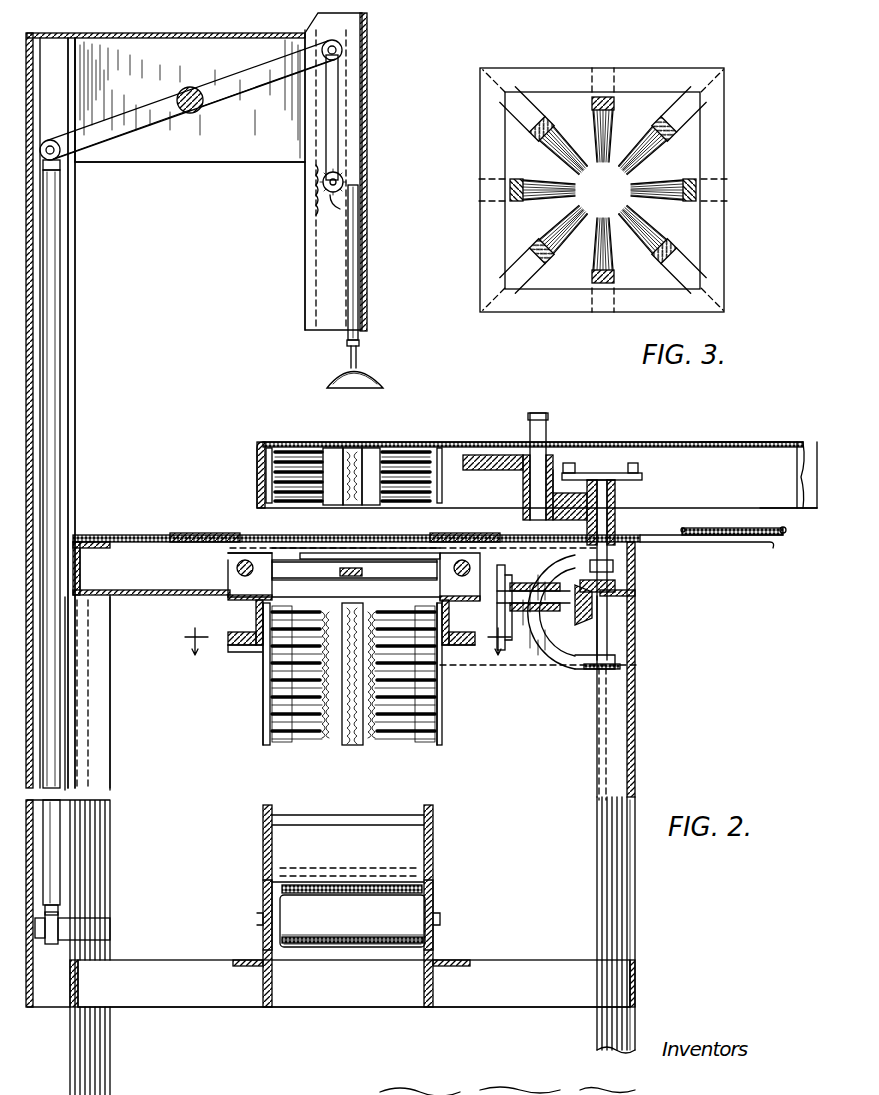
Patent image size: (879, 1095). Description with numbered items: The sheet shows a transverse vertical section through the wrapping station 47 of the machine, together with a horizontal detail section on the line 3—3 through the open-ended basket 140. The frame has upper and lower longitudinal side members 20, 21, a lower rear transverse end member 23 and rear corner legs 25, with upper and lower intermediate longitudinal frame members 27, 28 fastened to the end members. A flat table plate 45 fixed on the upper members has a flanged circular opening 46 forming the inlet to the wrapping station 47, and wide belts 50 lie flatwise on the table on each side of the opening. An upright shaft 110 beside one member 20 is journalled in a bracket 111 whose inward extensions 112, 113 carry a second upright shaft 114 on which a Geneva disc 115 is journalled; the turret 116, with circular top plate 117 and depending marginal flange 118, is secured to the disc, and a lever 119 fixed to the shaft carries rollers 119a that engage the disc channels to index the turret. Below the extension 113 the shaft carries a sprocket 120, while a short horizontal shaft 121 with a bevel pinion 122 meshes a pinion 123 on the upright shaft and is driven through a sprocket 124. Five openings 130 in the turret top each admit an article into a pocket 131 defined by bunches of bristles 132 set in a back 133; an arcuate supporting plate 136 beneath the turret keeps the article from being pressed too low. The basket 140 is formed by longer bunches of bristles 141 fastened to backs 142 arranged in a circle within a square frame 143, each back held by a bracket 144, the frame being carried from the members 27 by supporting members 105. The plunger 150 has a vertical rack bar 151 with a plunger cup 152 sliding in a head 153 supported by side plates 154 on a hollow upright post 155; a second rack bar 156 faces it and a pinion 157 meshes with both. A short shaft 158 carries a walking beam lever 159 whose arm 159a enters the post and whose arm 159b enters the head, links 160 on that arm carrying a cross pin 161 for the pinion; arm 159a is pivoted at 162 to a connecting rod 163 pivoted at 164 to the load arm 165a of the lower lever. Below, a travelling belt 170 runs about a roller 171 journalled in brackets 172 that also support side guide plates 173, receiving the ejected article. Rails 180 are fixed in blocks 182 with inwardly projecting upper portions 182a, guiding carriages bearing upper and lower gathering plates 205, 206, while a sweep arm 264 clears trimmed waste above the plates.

In FIG. 2, the section line 3— 3 is at (344, 646).
In FIG. 2, the upper longitudinal side member 20 is at (80, 569).
In FIG. 2, the lower longitudinal side member 21 is at (80, 984).
In FIG. 2, the lower rear transverse end member 23 is at (186, 1005).
In FIG. 2, the rear corner leg 25 is at (110, 863).
In FIG. 2, the upper intermediate longitudinal frame member 27 is at (225, 596).
In FIG. 2, the lower intermediate longitudinal frame member 28 is at (262, 985).
In FIG. 2, the table plate 45 is at (133, 535).
In FIG. 2, the circular opening 46 is at (286, 545).
In FIG. 2, the wrapping station 47 is at (241, 682).
In FIG. 2, the belt 50 is at (195, 534).
In FIG. 2, the carriage bracket 105 is at (256, 635).
In FIG. 2, the upright shaft 110 is at (612, 613).
In FIG. 2, the bracket 111 is at (616, 519).
In FIG. 2, the top bracket extension 112 is at (545, 519).
In FIG. 2, the bottom bracket extension 113 is at (560, 640).
In FIG. 2, the second upright shaft 114 is at (540, 412).
In FIG. 2, the Geneva disc 115 is at (555, 455).
In FIG. 2, the turret 116 is at (749, 436).
In FIG. 2, the circular top plate 117 is at (694, 441).
In FIG. 2, the depending marginal flange 118 is at (800, 470).
In FIG. 2, the lever 119 is at (620, 472).
In FIG. 2, the roller 119a is at (640, 467).
In FIG. 2, the sprocket 120 is at (622, 665).
In FIG. 2, the short horizontal shaft 121 is at (540, 655).
In FIG. 2, the bevel pinion 122 is at (585, 620).
In FIG. 2, the pinion 123 is at (620, 587).
In FIG. 2, the sprocket 124 is at (505, 680).
In FIG. 2, the circular opening 130 is at (419, 436).
In FIG. 2, the article holding pocket 131 is at (381, 456).
In FIG. 2, the bunch of bristles 132 is at (305, 452).
In FIG. 2, the back 133 is at (270, 444).
In FIG. 2, the arcuate supporting plate 136 is at (781, 536).
In FIG. 2, the basket 140 is at (305, 750).
In FIG. 2, the bunch of bristles 141 is at (396, 746).
In FIG. 3, the bunch of bristles 141 is at (605, 165).
In FIG. 2, the back 142 is at (438, 746).
In FIG. 3, the back 142 is at (672, 145).
In FIG. 2, the square frame 143 is at (250, 648).
In FIG. 3, the square frame 143 is at (724, 223).
In FIG. 2, the bracket 144 is at (266, 685).
In FIG. 3, the bracket 144 is at (585, 281).
In FIG. 2, the plunger 150 is at (340, 303).
In FIG. 2, the vertical rack bar 151 is at (358, 251).
In FIG. 2, the plunger cup 152 is at (372, 380).
In FIG. 2, the head 153 is at (367, 289).
In FIG. 2, the side plate 154 is at (230, 150).
In FIG. 2, the hollow upright post 155 is at (85, 241).
In FIG. 2, the second rack bar 156 is at (314, 210).
In FIG. 2, the pinion 157 is at (348, 209).
In FIG. 2, the short shaft 158 is at (186, 114).
In FIG. 2, the walking beam lever 159 is at (211, 75).
In FIG. 2, the lever arm 159a is at (124, 105).
In FIG. 2, the lever arm 159b is at (230, 77).
In FIG. 2, the link 160 is at (330, 134).
In FIG. 2, the cross pin 161 is at (343, 181).
In FIG. 2, the pivotal connection 162 is at (52, 145).
In FIG. 2, the connecting rod 163 is at (55, 301).
In FIG. 2, the pivotal connection 164 is at (56, 914).
In FIG. 2, the load arm 165a is at (110, 930).
In FIG. 2, the travelling belt 170 is at (333, 882).
In FIG. 2, the roller 171 is at (348, 921).
In FIG. 2, the bracket 172 is at (263, 831).
In FIG. 2, the side guide plate 173 is at (290, 812).
In FIG. 2, the longitudinal rail 180 is at (237, 566).
In FIG. 2, the block 182 is at (228, 580).
In FIG. 2, the upper block portion 182a is at (266, 560).
In FIG. 2, the upper gathering plate 205 is at (315, 556).
In FIG. 2, the lower gathering plate 206 is at (330, 580).
In FIG. 2, the sweep arm 264 is at (397, 560).